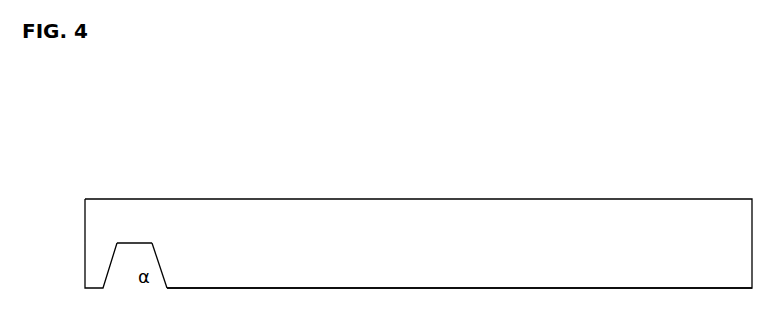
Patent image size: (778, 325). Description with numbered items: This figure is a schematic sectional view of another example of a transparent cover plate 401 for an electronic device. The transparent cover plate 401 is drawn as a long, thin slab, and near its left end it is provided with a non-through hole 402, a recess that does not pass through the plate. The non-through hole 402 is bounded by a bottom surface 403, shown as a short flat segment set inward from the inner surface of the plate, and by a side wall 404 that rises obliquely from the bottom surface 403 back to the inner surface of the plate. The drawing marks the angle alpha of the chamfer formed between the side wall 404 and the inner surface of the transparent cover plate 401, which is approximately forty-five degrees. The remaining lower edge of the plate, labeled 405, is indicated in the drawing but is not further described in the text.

The transparent cover plate 401 is at (268, 212).
The non-through hole 402 is at (122, 278).
The bottom surface 403 is at (132, 242).
The side wall 404 is at (163, 280).
The bottom surface 405 is at (265, 288).